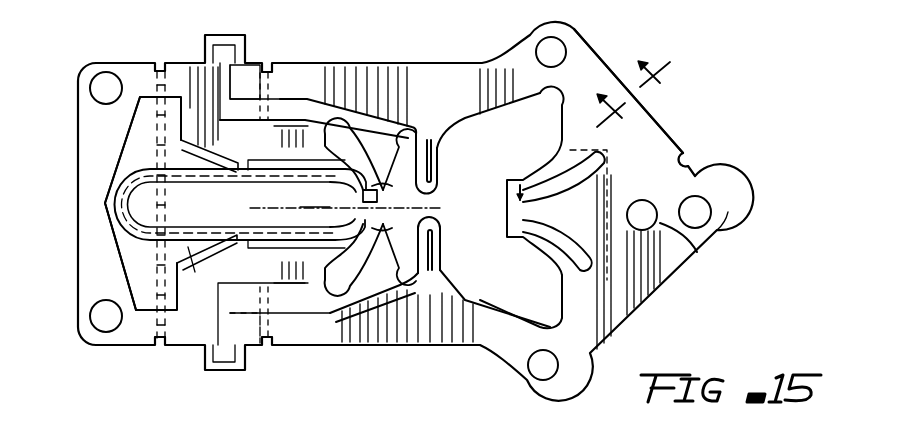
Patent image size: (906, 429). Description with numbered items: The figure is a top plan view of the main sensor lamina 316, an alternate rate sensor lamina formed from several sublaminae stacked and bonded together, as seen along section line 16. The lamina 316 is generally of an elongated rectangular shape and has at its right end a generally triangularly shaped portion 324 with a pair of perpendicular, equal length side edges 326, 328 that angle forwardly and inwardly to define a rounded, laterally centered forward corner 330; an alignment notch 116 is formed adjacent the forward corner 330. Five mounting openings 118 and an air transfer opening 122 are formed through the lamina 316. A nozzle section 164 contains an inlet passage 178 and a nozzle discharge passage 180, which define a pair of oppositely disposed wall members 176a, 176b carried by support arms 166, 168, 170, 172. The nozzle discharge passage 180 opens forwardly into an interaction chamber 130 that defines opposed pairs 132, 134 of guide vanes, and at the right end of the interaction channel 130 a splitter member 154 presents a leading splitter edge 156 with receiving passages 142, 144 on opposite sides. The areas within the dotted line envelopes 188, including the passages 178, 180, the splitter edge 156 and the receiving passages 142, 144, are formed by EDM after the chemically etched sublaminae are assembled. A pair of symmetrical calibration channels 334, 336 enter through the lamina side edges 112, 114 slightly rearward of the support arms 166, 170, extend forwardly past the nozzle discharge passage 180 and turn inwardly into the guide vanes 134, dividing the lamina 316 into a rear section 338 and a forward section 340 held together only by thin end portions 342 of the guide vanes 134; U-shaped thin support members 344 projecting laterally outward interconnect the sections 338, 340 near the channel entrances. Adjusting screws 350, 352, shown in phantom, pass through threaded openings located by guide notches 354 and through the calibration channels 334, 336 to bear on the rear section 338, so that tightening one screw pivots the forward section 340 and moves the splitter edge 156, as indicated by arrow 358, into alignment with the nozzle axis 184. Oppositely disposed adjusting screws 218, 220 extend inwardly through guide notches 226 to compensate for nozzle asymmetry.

The lamina side edge 112 is at (332, 63).
The lamina side edge 114 is at (336, 347).
The alignment notch 116 is at (698, 172).
The mounting openings 118 is at (95, 75).
The air transfer opening 122 is at (696, 233).
The interaction chamber 130 is at (366, 212).
The guide vanes 132 is at (386, 184).
The guide vanes 134 is at (446, 146).
The receiving passage 142 is at (560, 170).
The receiving passage 144 is at (568, 272).
The splitter member 154 is at (538, 236).
The splitter edge 156 is at (510, 200).
The nozzle section 164 is at (136, 247).
The support arm 166 is at (214, 161).
The support arm 168 is at (357, 146).
The support arm 170 is at (237, 243).
The support arm 172 is at (357, 266).
The wall member 176a is at (262, 160).
The wall member 176b is at (270, 234).
The inlet passage 178 is at (229, 204).
The nozzle discharge passage 180 is at (378, 203).
The nozzle axis 184 is at (310, 214).
The dotted line envelopes 188 is at (190, 258).
The section line 16 is at (639, 105).
The adjusting screw 218 is at (152, 268).
The adjusting screw 220 is at (152, 128).
The guide notches 226 is at (156, 62).
The main sensor lamina 316 is at (677, 146).
The triangularly shaped portion 324 is at (642, 197).
The side edge 326 is at (690, 160).
The side edge 328 is at (656, 308).
The forward corner 330 is at (729, 212).
The calibration channel 334 is at (303, 108).
The calibration channel 336 is at (282, 318).
The lamina section 338 is at (166, 64).
The lamina section 340 is at (282, 72).
The thin end portions 342 is at (446, 186).
The support members 344 is at (230, 35).
The adjusting screw 350 is at (258, 320).
The adjusting screw 352 is at (270, 118).
The guide notches 354 is at (266, 68).
The arrow 358 is at (522, 182).